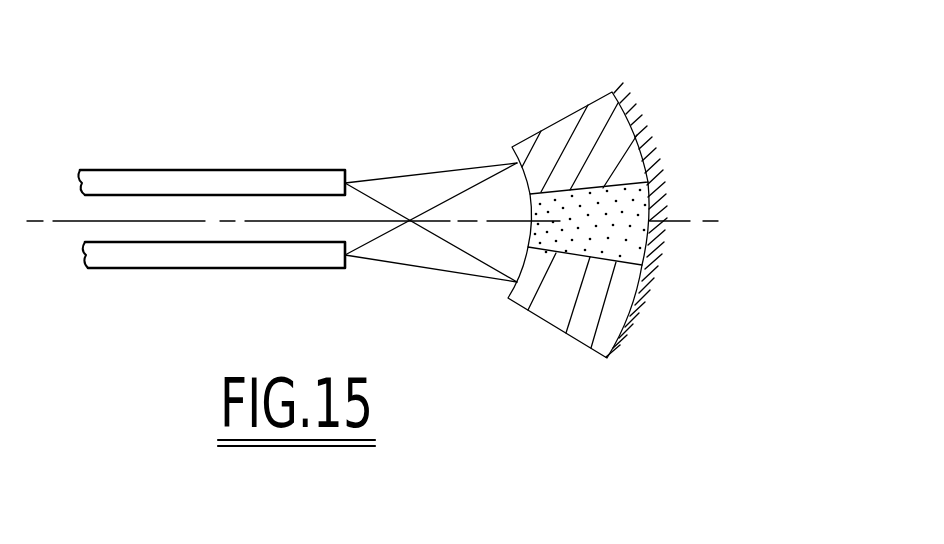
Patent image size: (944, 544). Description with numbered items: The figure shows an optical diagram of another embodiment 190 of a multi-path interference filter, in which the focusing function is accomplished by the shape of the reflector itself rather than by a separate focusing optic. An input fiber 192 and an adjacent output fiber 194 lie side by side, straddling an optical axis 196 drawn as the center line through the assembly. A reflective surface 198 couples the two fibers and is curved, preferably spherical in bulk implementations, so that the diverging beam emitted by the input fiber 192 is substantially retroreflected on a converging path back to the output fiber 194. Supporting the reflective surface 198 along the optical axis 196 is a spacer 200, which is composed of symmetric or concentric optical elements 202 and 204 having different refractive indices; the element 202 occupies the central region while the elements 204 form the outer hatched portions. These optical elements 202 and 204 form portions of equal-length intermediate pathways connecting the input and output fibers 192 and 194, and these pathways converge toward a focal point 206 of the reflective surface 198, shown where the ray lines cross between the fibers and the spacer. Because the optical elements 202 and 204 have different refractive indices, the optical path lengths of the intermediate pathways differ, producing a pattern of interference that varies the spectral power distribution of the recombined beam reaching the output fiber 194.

The multi-path filter embodiment 190 is at (159, 62).
The input fiber 192 is at (207, 172).
The output fiber 194 is at (200, 268).
The optical axis 196 is at (683, 222).
The reflective surface 198 is at (642, 137).
The spacer 200 is at (564, 110).
The optical element 202 is at (650, 191).
The optical element 204 is at (598, 108).
The focal point 206 is at (347, 223).